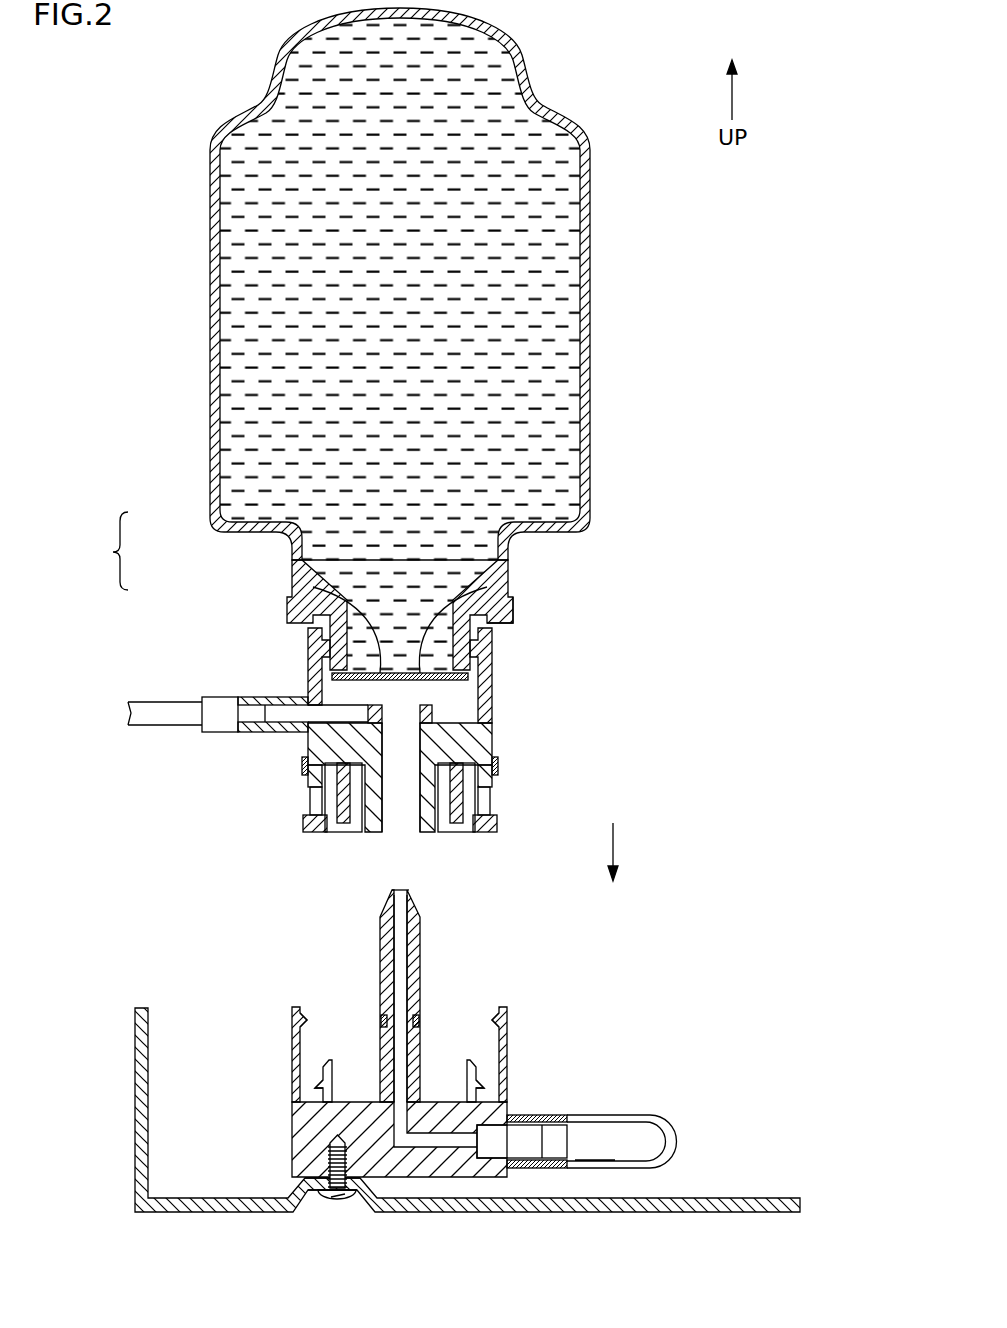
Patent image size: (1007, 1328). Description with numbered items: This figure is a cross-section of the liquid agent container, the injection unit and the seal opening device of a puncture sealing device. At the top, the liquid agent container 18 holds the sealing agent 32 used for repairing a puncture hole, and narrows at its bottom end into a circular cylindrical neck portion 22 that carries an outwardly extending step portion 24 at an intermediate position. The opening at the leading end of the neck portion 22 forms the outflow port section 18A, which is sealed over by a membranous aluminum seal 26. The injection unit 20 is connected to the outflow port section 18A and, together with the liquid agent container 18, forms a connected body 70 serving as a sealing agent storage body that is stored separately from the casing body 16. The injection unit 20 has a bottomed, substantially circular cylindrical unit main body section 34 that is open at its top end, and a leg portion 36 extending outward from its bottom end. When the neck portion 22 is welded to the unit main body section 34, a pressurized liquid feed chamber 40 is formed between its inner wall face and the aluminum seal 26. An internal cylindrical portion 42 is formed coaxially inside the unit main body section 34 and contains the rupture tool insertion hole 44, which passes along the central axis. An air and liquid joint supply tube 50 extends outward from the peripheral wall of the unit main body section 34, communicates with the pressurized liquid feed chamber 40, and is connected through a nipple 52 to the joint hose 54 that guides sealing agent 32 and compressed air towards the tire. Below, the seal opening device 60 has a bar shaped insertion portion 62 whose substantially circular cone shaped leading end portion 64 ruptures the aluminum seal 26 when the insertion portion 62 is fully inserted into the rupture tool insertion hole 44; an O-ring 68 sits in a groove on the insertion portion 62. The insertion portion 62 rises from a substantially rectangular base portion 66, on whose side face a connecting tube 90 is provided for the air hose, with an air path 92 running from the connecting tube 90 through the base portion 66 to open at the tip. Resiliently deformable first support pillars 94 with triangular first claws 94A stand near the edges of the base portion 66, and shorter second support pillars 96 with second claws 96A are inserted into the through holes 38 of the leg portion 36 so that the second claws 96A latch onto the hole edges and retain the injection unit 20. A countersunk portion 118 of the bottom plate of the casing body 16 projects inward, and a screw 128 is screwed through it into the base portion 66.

The casing body 16 is at (198, 1213).
The liquid agent container 18 is at (210, 493).
The outflow port section 18A is at (458, 604).
The injection unit 20 is at (308, 660).
The neck portion 22 is at (492, 636).
The step portion 24 is at (513, 628).
The aluminum seal 26 is at (322, 590).
The sealing agent 32 is at (515, 327).
The unit main body section 34 is at (492, 745).
The leg portion 36 is at (548, 825).
The through holes 38 is at (468, 834).
The pressurized liquid feed chamber 40 is at (360, 711).
The internal cylindrical portion 42 is at (432, 717).
The rupture tool insertion hole 44 is at (395, 834).
The air and liquid joint supply tube 50 is at (263, 733).
The nipple 52 is at (221, 733).
The joint hose 54 is at (156, 697).
The seal opening device 60 is at (243, 1012).
The insertion portion 62 is at (428, 945).
The leading end portion 64 is at (413, 917).
The base portion 66 is at (292, 1150).
The O-ring 68 is at (416, 1023).
The connected body 70 is at (103, 551).
The connecting tube 90 is at (540, 1170).
The air path 92 is at (399, 920).
The first support pillar 94 is at (507, 1035).
The first claw 94A is at (496, 1010).
The second support pillar 96 is at (477, 1090).
The second claw 96A is at (475, 1076).
The countersunk portion 118 is at (312, 1193).
The screw 128 is at (332, 1193).